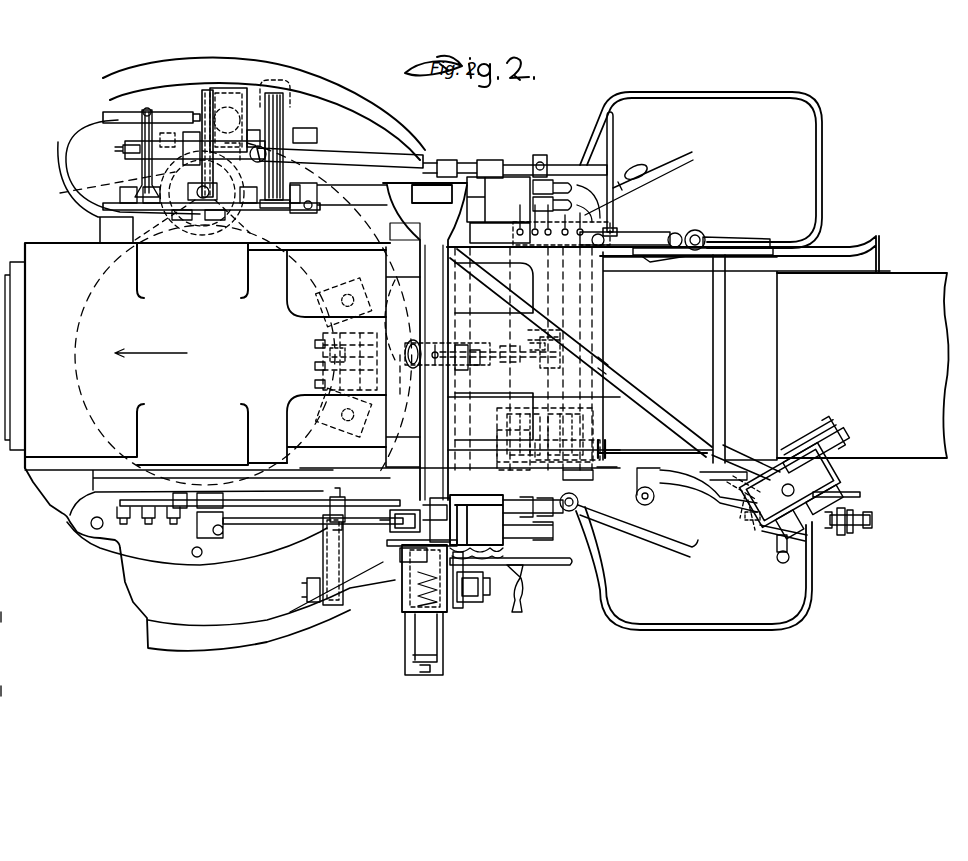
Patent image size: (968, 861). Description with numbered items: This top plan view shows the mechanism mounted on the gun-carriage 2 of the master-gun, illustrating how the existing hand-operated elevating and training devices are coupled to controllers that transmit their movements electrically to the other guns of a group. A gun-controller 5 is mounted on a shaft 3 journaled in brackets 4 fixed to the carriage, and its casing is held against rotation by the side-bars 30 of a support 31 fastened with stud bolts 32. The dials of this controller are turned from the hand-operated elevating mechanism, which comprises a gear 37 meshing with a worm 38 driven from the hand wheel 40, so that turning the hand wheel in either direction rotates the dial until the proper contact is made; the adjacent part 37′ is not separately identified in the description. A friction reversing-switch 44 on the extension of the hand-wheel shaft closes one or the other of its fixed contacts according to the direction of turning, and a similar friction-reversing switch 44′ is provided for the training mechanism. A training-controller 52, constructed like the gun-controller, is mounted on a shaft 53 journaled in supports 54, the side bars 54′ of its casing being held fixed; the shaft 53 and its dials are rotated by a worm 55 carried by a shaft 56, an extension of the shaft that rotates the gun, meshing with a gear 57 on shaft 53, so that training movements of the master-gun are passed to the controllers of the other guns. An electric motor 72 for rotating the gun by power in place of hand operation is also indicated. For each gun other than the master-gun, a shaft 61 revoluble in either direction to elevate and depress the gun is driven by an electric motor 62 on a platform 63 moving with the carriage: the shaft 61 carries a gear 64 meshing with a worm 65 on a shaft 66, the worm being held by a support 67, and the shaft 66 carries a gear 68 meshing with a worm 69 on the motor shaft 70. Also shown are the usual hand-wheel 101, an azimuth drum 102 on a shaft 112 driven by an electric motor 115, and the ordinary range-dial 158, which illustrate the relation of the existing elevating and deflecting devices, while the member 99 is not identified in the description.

The carriage 2 is at (477, 397).
The shaft 3 is at (402, 590).
The brackets 4 is at (387, 556).
The gun-controller 5 is at (423, 648).
The side-bars 30 is at (392, 530).
The support 31 is at (328, 555).
The stud bolts 32 is at (330, 500).
The gear 37 is at (400, 508).
The block 37' is at (401, 546).
The worm 38 is at (545, 561).
The hand wheel 40 is at (530, 568).
The friction reversing-switch 44 is at (534, 450).
The friction-reversing switch 44' is at (547, 154).
The training-controller 52 is at (255, 90).
The shaft 53 is at (300, 150).
The supports 54 is at (307, 140).
The side bars 54' is at (299, 76).
The worm 55 is at (243, 210).
The shaft 56 is at (200, 218).
The gear 57 is at (205, 104).
The shaft 61 is at (514, 526).
The electric motor 62 is at (605, 395).
The platform 63 is at (595, 435).
The gear 64 is at (500, 363).
The worm 65 is at (483, 355).
The shaft 66 is at (492, 348).
The support 67 is at (405, 372).
The gear 68 is at (560, 335).
The worm 69 is at (602, 357).
The motor shaft 70 is at (548, 330).
The electric motor 72 is at (322, 360).
The bracket 99 is at (740, 449).
The hand-wheel 101 is at (817, 535).
The azimuth drum 102 is at (862, 494).
The shaft 112 is at (833, 485).
The electric motor 115 is at (752, 508).
The range-dial 158 is at (772, 538).